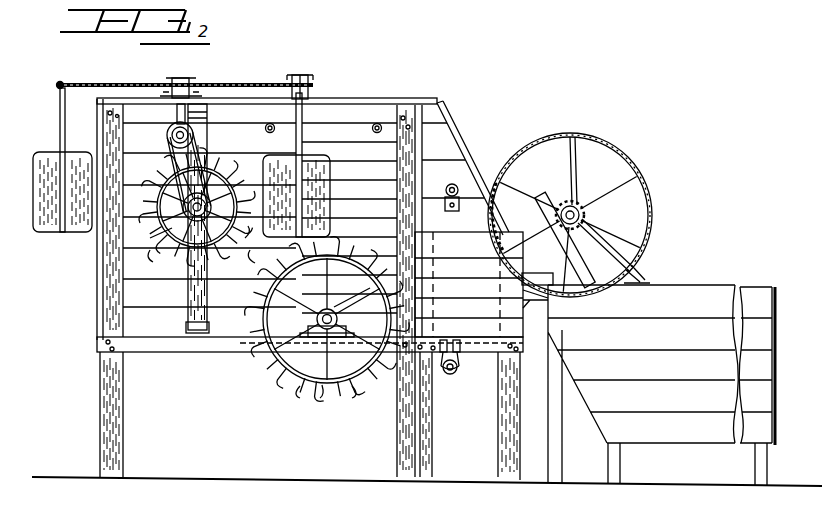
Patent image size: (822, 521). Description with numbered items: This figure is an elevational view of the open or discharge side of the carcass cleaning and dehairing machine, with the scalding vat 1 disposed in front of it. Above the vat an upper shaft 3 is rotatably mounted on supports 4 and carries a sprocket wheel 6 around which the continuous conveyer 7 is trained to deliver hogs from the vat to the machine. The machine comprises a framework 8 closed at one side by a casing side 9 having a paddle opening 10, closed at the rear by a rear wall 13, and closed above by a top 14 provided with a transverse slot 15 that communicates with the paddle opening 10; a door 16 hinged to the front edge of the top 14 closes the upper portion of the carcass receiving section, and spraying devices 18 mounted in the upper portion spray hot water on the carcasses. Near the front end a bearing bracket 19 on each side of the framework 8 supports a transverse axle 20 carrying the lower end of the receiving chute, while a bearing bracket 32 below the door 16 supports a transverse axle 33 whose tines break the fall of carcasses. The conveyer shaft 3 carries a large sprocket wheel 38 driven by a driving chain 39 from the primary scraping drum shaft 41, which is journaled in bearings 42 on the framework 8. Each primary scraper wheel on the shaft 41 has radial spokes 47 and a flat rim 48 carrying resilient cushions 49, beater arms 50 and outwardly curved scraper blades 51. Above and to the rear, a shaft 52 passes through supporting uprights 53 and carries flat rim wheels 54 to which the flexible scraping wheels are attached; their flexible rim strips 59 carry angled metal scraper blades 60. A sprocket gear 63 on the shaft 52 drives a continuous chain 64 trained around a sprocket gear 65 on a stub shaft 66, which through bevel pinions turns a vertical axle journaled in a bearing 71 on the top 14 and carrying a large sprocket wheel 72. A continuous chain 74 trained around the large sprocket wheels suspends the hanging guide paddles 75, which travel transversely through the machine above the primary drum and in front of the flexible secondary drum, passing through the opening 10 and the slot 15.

The scalding vat 1 is at (661, 385).
The upper shaft 3 is at (577, 206).
The supports 4 is at (570, 258).
The sprocket wheel 6 is at (596, 229).
The continuous conveyer 7 is at (637, 264).
The framework 8 is at (110, 385).
The casing side 9 is at (349, 218).
The paddle opening 10 is at (332, 179).
The rear wall 13 is at (97, 287).
The top 14 is at (406, 100).
The transverse slot 15 is at (316, 105).
The door 16 is at (458, 178).
The spraying devices 18 is at (266, 126).
The bearing bracket 19 is at (458, 370).
The transverse axle 20 is at (449, 376).
The bearing bracket 32 is at (469, 279).
The transverse axle 33 is at (470, 163).
The large sprocket wheel 38 is at (570, 165).
The driving chain 39 is at (525, 148).
The primary scraping drum shaft 41 is at (352, 296).
The bearings 42 is at (322, 350).
The radial spokes 47 is at (327, 276).
The flat rim 48 is at (314, 322).
The resilient cushions 49 is at (310, 394).
The beater arms 50 is at (347, 392).
The scraper blades 51 is at (319, 400).
The shaft 52 is at (150, 238).
The supporting uprights 53 is at (188, 327).
The flat rim wheels 54 is at (261, 240).
The flexible rim strips 59 is at (256, 280).
The metal scraper blades 60 is at (153, 262).
The sprocket gear 63 is at (222, 168).
The continuous chain 64 is at (150, 212).
The sprocket gear 65 is at (171, 162).
The stub shaft 66 is at (170, 130).
The bearing 71 is at (173, 78).
The large sprocket wheel 72 is at (184, 78).
The continuous chain 74 is at (124, 84).
The guide paddles 75 is at (58, 160).